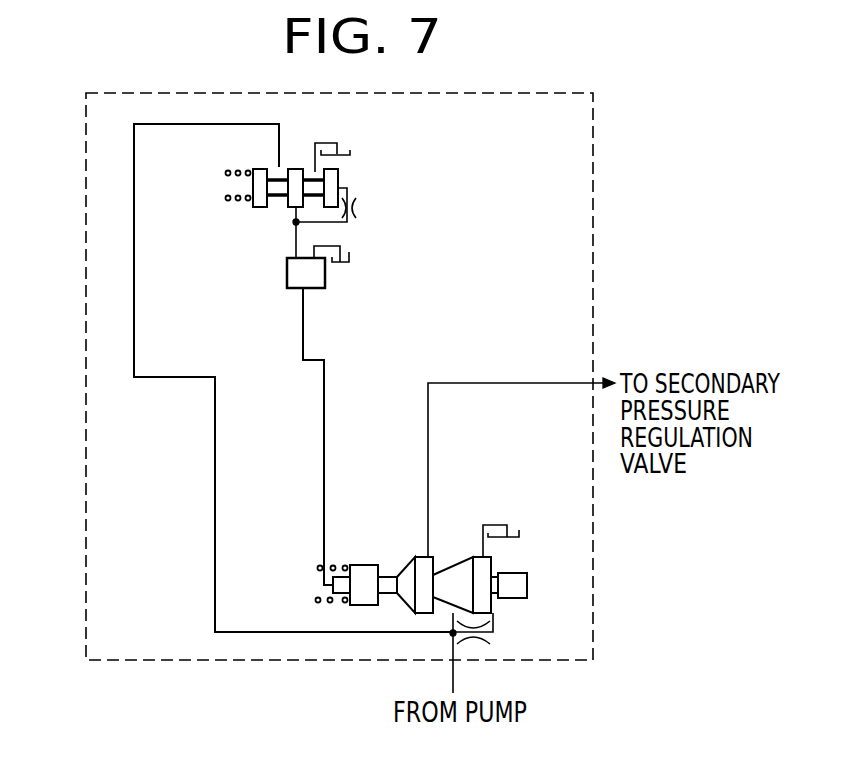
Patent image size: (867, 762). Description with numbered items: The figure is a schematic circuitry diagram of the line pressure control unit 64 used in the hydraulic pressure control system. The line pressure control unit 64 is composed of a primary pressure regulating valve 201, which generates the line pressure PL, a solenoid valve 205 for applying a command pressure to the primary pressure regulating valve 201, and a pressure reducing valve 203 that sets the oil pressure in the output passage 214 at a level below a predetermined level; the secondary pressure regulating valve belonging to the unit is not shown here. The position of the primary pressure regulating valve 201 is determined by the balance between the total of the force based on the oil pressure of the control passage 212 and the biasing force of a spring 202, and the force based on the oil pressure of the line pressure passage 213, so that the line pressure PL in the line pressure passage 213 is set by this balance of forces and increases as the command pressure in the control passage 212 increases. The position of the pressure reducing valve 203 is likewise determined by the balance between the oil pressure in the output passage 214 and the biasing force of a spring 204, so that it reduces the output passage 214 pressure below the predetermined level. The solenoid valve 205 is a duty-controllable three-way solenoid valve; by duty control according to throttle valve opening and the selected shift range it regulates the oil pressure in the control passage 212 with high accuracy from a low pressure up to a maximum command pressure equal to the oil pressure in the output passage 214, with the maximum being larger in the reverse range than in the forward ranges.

The line pressure control unit 64 is at (86, 505).
The primary pressure regulating valve 201 is at (528, 585).
The spring 202 is at (322, 570).
The pressure reducing valve 203 is at (350, 180).
The spring 204 is at (243, 198).
The solenoid valve 205 is at (287, 277).
The control passage 212 is at (323, 512).
The line pressure passage 213 is at (215, 603).
The output passage 214 is at (292, 238).